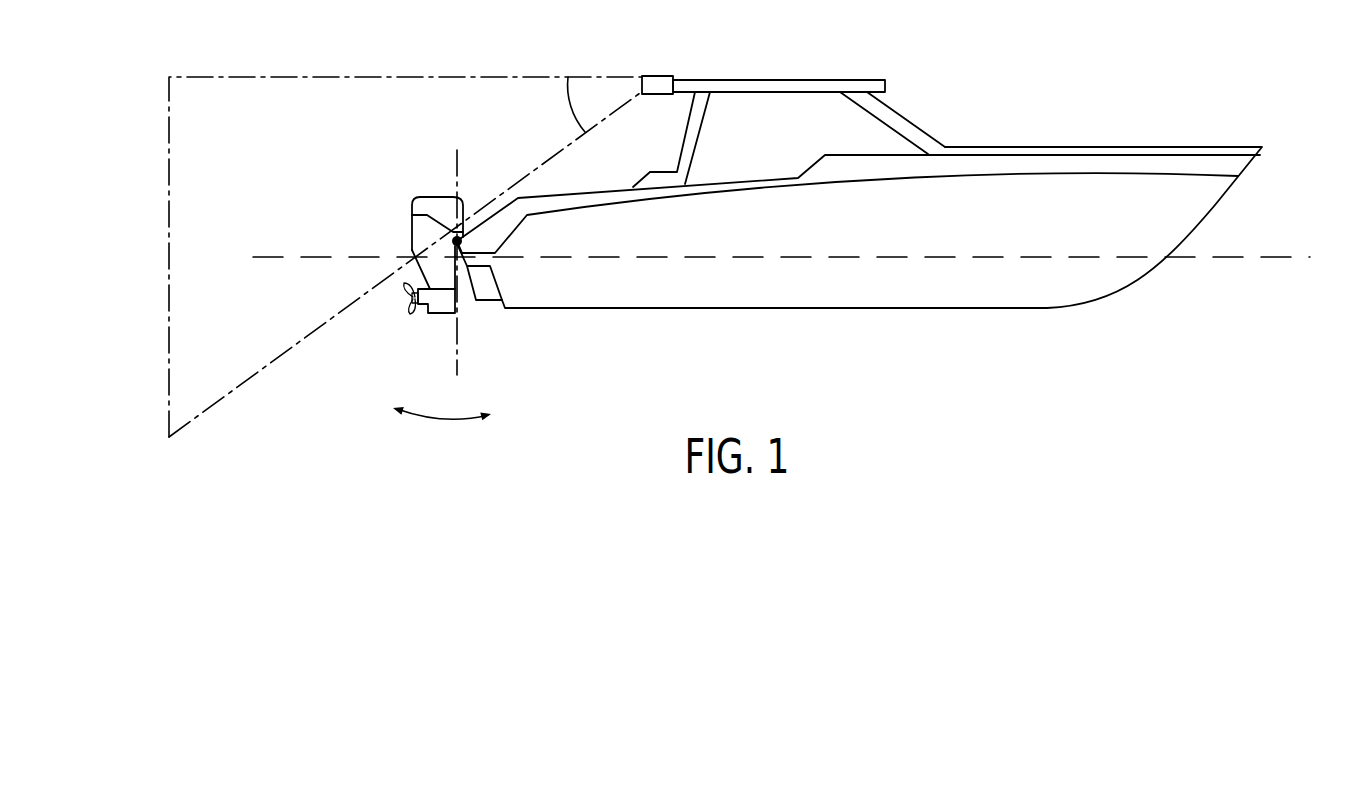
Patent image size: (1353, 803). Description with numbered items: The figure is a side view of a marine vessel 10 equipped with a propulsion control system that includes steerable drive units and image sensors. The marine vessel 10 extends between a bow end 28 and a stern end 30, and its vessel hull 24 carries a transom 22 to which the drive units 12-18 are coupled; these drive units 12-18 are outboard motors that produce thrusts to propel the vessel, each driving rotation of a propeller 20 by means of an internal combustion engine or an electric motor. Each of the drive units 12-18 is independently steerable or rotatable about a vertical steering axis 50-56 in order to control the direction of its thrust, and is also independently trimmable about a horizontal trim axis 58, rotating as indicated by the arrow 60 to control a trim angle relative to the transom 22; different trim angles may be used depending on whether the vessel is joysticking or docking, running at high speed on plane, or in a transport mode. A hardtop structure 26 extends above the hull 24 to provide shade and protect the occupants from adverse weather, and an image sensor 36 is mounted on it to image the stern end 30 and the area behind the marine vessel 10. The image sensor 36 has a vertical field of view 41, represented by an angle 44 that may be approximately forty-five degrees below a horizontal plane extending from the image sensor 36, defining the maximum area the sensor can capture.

The marine vessel 10 is at (1130, 63).
The drive units 12-18 is at (412, 210).
The propeller 20 is at (403, 295).
The transom 22 is at (462, 238).
The vessel hull 24 is at (868, 309).
The hardtop structure 26 is at (777, 80).
The bow end 28 is at (1300, 212).
The stern end 30 is at (138, 362).
The image sensor 36 is at (658, 77).
The vertical field of view 41 is at (360, 76).
The angle 44 is at (568, 108).
The vertical steering axes 50-56 is at (457, 335).
The horizontal trim axis 58 is at (460, 248).
The arrow 60 is at (442, 420).